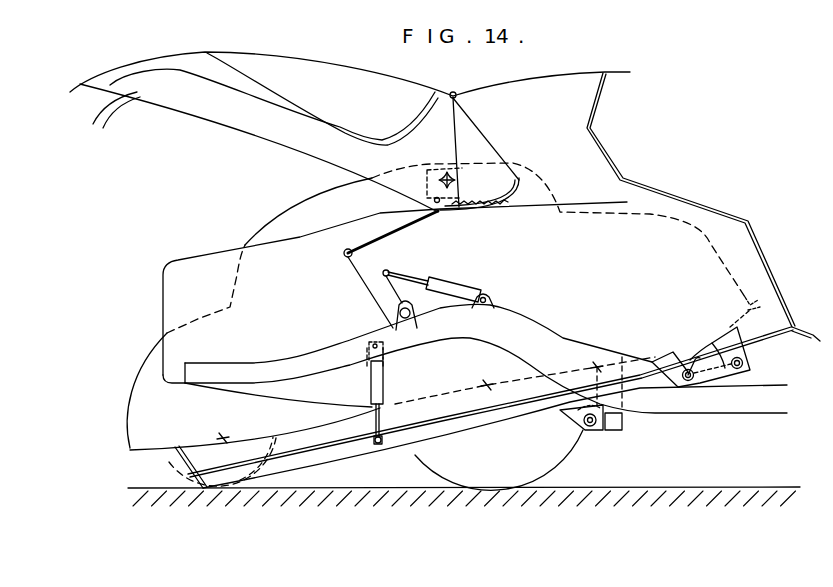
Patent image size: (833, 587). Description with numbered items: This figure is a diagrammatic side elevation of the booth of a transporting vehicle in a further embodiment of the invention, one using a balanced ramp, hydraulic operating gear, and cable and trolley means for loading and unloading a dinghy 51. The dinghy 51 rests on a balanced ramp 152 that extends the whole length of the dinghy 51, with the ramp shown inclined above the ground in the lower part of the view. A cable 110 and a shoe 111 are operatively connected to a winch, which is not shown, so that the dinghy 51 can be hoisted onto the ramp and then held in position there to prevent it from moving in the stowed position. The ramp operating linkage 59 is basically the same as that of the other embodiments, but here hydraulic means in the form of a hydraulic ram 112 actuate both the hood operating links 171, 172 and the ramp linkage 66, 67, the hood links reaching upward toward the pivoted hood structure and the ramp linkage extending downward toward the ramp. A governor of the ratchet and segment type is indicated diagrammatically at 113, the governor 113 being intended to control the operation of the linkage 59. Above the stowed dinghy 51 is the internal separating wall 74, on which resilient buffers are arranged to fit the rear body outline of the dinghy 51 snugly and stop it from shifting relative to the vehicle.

The dinghy 51 is at (146, 438).
The ramp operating linkage 59 is at (440, 275).
The ramp linkage 66 is at (386, 414).
The ramp linkage 67 is at (385, 378).
The internal separating wall 74 is at (598, 100).
The cable 110 is at (702, 347).
The shoe 111 is at (797, 327).
The hydraulic ram 112 is at (491, 292).
The governor 113 is at (437, 176).
The balanced ramp 152 is at (343, 452).
The hood operating link 171 is at (372, 262).
The hood operating link 172 is at (398, 229).